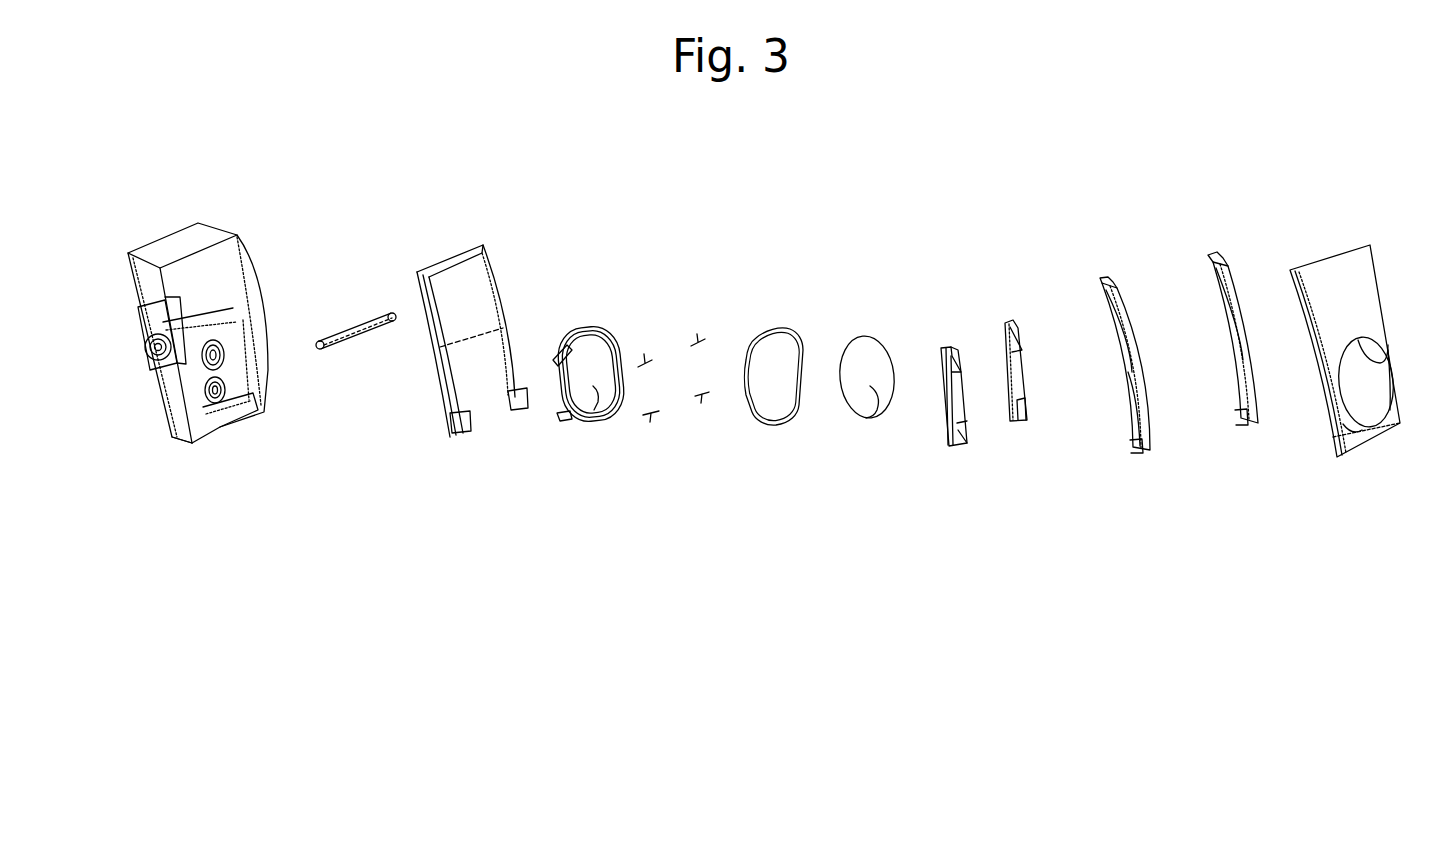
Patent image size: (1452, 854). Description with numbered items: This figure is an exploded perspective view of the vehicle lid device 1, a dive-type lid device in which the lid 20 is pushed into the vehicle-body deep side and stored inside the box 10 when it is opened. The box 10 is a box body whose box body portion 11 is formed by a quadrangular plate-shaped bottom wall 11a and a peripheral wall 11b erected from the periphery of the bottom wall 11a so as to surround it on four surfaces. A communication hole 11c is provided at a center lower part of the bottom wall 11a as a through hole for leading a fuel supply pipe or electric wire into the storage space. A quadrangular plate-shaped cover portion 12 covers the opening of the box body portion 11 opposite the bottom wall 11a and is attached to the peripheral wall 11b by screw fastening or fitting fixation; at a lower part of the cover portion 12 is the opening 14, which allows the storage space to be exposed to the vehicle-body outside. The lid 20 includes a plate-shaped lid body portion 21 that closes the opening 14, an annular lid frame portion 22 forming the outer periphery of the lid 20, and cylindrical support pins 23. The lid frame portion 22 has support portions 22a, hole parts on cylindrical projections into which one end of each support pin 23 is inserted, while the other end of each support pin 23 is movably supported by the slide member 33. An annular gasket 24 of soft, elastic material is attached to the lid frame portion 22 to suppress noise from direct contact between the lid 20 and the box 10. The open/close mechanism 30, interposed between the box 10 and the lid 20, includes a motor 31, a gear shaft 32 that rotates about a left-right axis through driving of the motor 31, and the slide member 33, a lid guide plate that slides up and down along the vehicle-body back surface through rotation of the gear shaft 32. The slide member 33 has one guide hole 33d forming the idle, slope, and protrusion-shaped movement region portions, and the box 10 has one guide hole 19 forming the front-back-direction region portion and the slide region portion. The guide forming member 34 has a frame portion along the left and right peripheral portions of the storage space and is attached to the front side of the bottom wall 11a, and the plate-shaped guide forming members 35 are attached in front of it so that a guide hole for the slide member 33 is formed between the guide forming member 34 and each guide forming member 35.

The vehicle lid device 1 is at (1363, 327).
The box 10 is at (196, 325).
The box body portion 11 is at (182, 417).
The bottom wall 11a is at (190, 270).
The peripheral wall 11b is at (167, 247).
The communication hole 11c is at (210, 370).
The cover portion 12 is at (1363, 379).
The opening 14 is at (1380, 363).
The guide hole 19 is at (1113, 310).
The lid 20 is at (708, 356).
The lid body portion 21 is at (872, 353).
The lid frame portion 22 is at (572, 356).
The support portion 22a is at (557, 360).
The support pin 23 is at (644, 356).
The gasket 24 is at (778, 422).
The open/close mechanism 30 is at (1083, 375).
The motor 31 is at (148, 350).
The gear shaft 32 is at (367, 327).
The slide member 33 is at (976, 400).
The guide hole 33d is at (958, 373).
The guide forming member 34 is at (460, 427).
The guide forming member 35 is at (1193, 352).